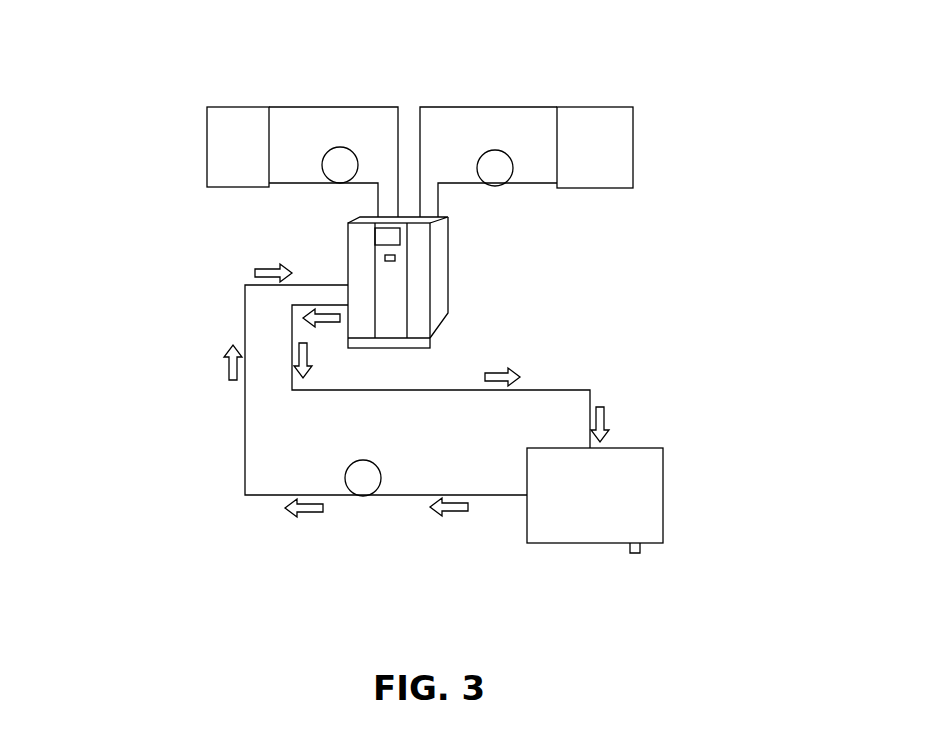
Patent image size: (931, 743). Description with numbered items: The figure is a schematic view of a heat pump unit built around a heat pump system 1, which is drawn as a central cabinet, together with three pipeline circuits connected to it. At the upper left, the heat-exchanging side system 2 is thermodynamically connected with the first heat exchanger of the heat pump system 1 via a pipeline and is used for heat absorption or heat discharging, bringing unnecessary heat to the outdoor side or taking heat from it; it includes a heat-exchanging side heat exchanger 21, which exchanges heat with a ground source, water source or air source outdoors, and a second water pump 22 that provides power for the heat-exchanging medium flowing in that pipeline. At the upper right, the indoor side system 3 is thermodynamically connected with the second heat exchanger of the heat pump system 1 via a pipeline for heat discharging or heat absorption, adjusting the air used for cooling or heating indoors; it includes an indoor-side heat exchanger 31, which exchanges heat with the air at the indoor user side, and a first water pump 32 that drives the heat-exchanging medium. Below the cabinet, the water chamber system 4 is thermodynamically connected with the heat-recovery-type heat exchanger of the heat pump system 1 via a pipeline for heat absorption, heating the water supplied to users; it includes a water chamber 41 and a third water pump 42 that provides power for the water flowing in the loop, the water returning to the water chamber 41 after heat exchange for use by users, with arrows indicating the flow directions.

The heat pump system 1 is at (418, 285).
The heat-exchanging side system 2 is at (302, 127).
The heat-exchanging side heat exchanger 21 is at (227, 164).
The second water pump 22 is at (340, 167).
The indoor side system 3 is at (487, 125).
The indoor-side heat exchanger 31 is at (588, 145).
The first water pump 32 is at (495, 170).
The water chamber system 4 is at (522, 418).
The water chamber 41 is at (623, 473).
The third water pump 42 is at (363, 480).